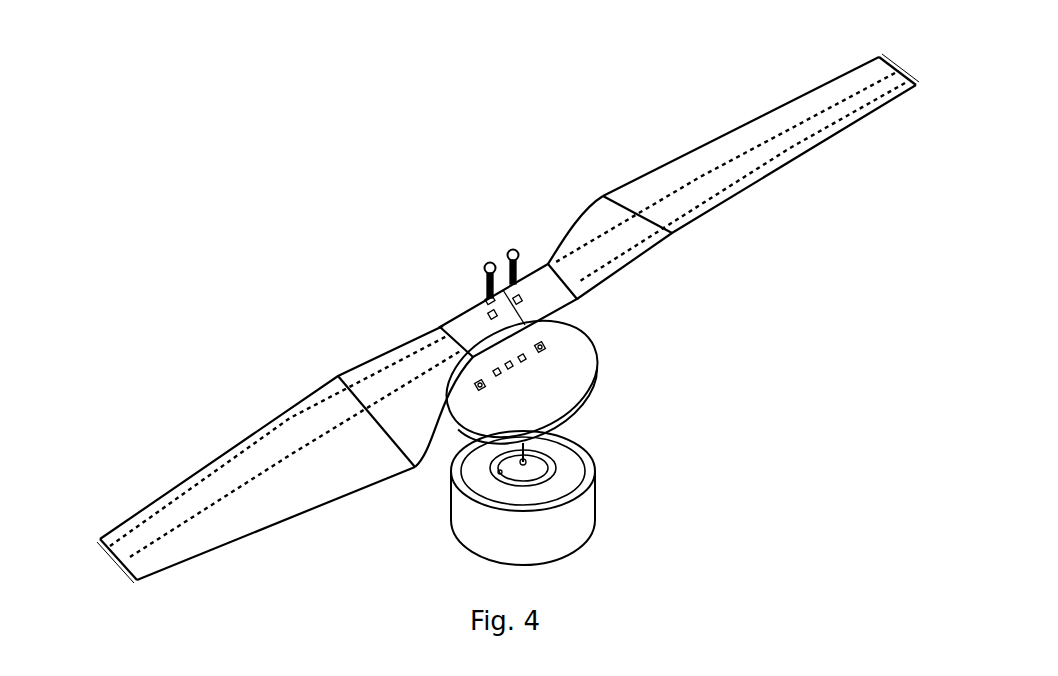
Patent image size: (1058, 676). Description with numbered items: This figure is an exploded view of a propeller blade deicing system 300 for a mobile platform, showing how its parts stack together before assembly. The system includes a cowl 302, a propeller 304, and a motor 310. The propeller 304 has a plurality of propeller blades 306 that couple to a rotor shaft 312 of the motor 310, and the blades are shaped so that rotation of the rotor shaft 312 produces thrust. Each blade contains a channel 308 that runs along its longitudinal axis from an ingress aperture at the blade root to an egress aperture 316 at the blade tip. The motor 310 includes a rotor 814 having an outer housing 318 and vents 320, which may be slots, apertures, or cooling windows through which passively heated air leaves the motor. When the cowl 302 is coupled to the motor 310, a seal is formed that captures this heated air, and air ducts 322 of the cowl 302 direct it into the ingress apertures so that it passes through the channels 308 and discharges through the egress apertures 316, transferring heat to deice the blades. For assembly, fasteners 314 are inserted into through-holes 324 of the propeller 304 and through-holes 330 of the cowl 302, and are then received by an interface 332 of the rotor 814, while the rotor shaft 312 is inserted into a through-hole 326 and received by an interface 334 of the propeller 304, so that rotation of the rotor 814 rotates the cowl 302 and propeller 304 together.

The propeller blade deicing system 300 is at (278, 256).
The cowl 302 is at (586, 340).
The propeller 304 is at (588, 214).
The propeller blades 306 is at (669, 175).
The channels 308 is at (797, 138).
The motor 310 is at (546, 541).
The rotor shaft 312 is at (530, 451).
The fasteners 314 is at (514, 250).
The egress aperture 316 is at (910, 72).
The outer housing 318 is at (598, 497).
The vents 320 is at (492, 527).
The air ducts 322 is at (545, 346).
The through-holes 324 is at (518, 297).
The through-hole 326 is at (511, 366).
The through-holes 330 is at (524, 359).
The interface 332 is at (540, 456).
The interface 334 is at (486, 298).
The rotor 814 is at (500, 472).